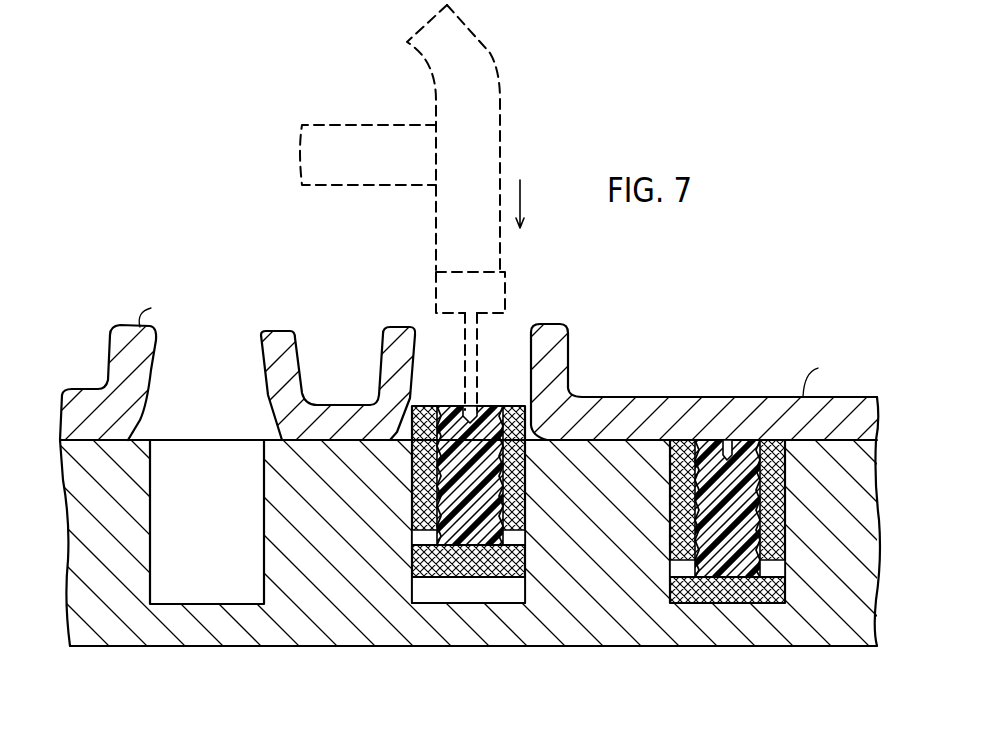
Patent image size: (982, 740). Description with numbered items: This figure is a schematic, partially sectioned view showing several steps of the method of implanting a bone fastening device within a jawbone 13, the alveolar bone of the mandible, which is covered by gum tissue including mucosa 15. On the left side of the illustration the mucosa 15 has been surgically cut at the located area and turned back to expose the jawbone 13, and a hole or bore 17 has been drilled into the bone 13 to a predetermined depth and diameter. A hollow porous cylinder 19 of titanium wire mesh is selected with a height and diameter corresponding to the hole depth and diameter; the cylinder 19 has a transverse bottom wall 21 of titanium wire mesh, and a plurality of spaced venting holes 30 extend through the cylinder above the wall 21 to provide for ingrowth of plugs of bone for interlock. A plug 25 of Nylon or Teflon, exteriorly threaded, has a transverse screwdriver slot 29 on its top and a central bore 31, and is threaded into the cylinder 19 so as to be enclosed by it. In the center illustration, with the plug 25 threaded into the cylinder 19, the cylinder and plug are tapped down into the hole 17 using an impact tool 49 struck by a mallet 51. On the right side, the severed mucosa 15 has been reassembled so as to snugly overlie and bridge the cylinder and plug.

The jawbone 13 is at (290, 633).
The mucosa 15 is at (112, 370).
The hole or bore 17 is at (150, 453).
The hollow porous cylinder 19 is at (412, 517).
The transverse bottom wall 21 is at (482, 580).
The plug 25 is at (487, 502).
The screwdriver slot 29 is at (467, 408).
The venting holes 30 is at (412, 545).
The central bore 31 is at (484, 410).
The impact tool 49 is at (505, 291).
The mallet 51 is at (491, 104).